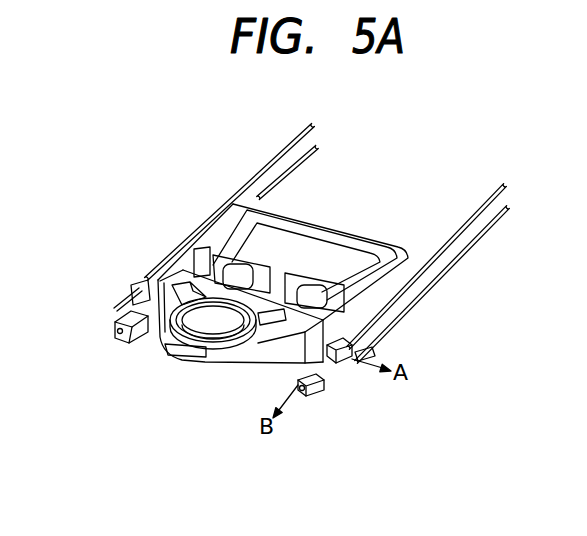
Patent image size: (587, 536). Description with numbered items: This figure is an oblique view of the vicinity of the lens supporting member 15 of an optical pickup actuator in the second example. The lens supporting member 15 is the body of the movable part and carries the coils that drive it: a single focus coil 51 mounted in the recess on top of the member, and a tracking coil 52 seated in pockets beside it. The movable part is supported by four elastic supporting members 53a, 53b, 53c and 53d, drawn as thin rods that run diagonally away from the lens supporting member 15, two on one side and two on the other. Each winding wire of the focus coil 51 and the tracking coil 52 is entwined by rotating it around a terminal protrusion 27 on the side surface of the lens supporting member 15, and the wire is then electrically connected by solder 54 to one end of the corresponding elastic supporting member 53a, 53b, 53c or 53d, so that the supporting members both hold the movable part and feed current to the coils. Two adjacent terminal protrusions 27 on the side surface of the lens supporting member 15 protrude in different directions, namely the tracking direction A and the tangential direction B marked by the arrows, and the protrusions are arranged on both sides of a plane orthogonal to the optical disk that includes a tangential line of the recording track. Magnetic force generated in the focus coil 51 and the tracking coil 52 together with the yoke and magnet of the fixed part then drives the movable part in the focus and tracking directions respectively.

The lens supporting member 15 is at (243, 360).
The terminal protrusion 27 is at (302, 396).
The focus coil 51 is at (225, 223).
The tracking coil 52 is at (252, 273).
The elastic supporting member 53a is at (492, 224).
The elastic supporting member 53b is at (481, 204).
The elastic supporting member 53c is at (320, 150).
The elastic supporting member 53d is at (282, 150).
The solder 54 is at (131, 278).